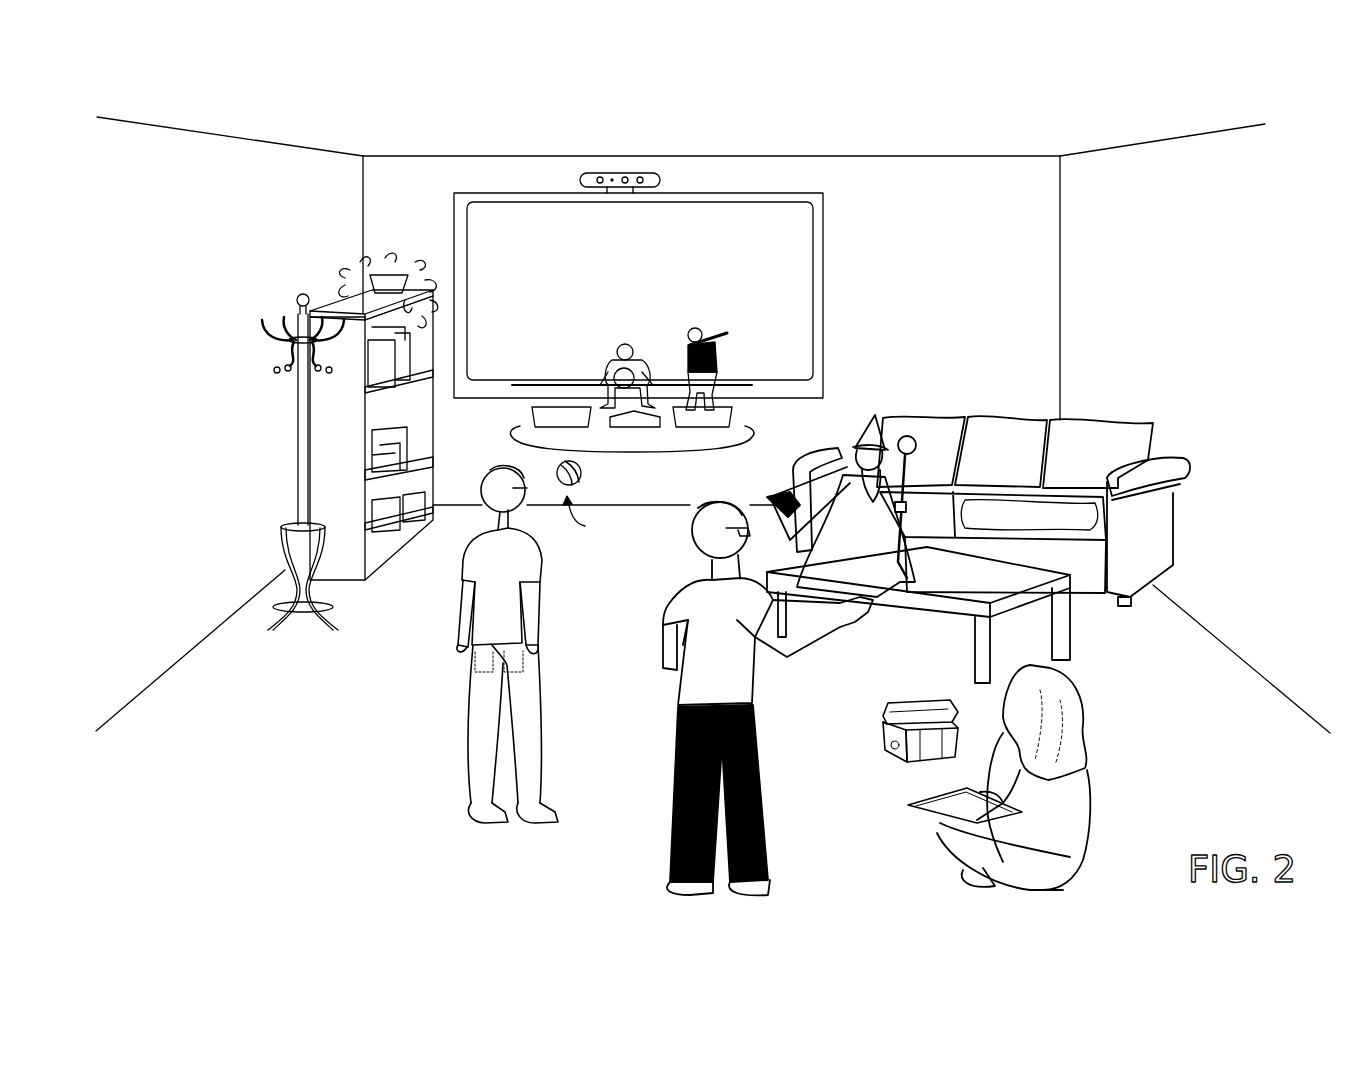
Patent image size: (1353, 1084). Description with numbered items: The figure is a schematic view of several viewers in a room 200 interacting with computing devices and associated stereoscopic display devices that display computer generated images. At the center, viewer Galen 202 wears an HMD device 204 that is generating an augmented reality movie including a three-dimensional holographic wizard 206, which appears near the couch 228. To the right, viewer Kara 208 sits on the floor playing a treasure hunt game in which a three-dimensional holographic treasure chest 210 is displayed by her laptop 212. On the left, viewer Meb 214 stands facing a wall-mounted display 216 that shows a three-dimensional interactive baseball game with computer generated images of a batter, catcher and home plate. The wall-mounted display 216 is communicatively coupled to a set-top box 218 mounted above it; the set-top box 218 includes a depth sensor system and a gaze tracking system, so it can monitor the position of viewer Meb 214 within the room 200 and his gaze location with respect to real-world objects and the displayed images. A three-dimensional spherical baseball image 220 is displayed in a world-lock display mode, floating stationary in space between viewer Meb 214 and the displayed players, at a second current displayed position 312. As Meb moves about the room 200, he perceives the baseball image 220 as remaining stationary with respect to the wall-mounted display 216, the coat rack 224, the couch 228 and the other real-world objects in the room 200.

The room 200 is at (877, 161).
The viewer Galen 202 is at (674, 772).
The HMD device 204 is at (738, 512).
The 3D holographic wizard 206 is at (841, 506).
The viewer Kara 208 is at (1092, 792).
The 3D holographic treasure chest 210 is at (935, 700).
The laptop 212 is at (910, 802).
The viewer Meb 214 is at (462, 612).
The wall-mounted display 216 is at (492, 192).
The set-top box 218 is at (620, 173).
The baseball image 220 is at (584, 478).
The coat rack 224 is at (298, 416).
The couch 228 is at (990, 417).
The second current displayed position 312 is at (589, 516).